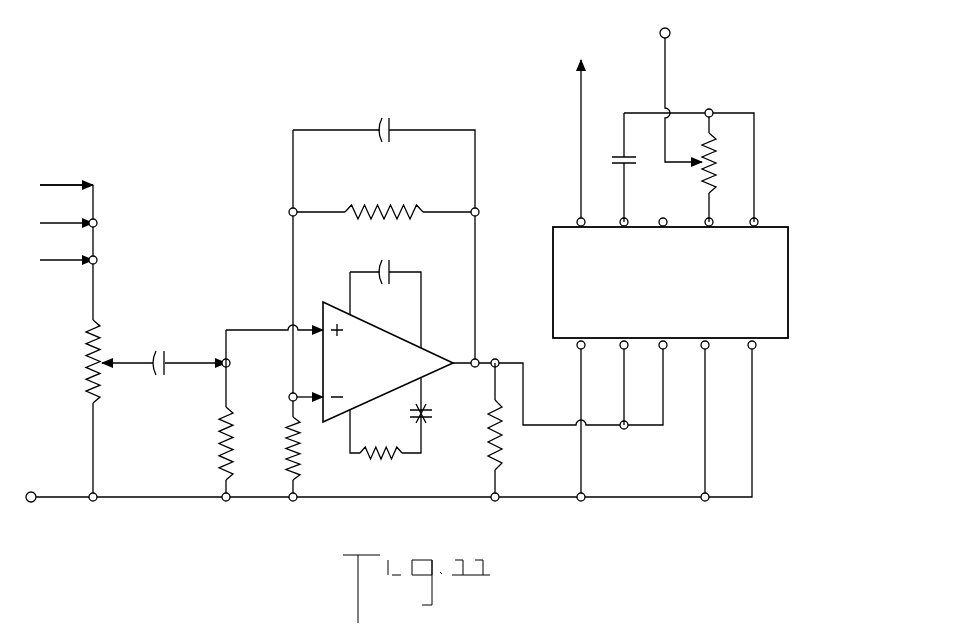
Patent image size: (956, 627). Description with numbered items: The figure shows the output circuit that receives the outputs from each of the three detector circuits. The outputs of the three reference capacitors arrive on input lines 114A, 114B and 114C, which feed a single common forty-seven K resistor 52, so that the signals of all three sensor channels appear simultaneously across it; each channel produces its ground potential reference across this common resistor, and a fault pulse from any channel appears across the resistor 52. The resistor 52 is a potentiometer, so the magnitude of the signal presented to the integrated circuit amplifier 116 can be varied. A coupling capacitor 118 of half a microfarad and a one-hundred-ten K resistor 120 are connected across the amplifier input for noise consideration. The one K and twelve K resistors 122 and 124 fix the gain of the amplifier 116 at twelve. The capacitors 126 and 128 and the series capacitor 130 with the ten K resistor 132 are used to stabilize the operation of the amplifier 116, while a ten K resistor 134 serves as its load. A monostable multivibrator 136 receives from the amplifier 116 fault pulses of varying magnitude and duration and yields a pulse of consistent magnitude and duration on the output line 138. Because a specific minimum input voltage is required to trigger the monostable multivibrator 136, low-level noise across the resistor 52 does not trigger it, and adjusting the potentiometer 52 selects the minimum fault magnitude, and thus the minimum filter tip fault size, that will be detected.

The input line 114A is at (89, 183).
The input line 114B is at (92, 220).
The input line 114C is at (92, 257).
The resistor 52 is at (88, 372).
The coupling capacitor 118 is at (165, 355).
The resistor 120 is at (220, 457).
The resistor 122 is at (307, 450).
The integrated circuit amplifier 116 is at (388, 362).
The resistor 124 is at (410, 222).
The capacitor 126 is at (395, 125).
The capacitor 128 is at (381, 284).
The capacitor 130 is at (428, 422).
The resistor 132 is at (405, 460).
The resistor 134 is at (502, 462).
The monostable multivibrator 136 is at (670, 252).
The output line 138 is at (578, 88).